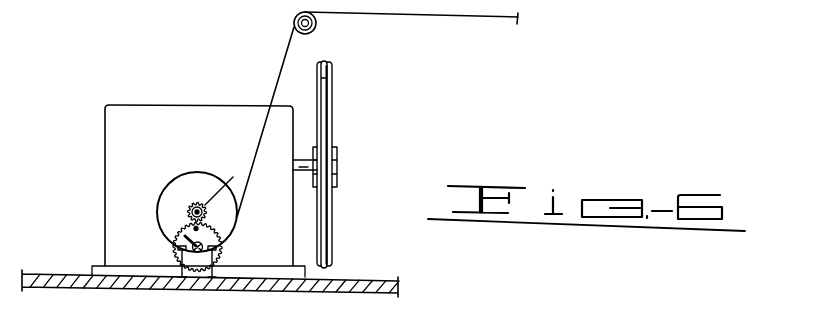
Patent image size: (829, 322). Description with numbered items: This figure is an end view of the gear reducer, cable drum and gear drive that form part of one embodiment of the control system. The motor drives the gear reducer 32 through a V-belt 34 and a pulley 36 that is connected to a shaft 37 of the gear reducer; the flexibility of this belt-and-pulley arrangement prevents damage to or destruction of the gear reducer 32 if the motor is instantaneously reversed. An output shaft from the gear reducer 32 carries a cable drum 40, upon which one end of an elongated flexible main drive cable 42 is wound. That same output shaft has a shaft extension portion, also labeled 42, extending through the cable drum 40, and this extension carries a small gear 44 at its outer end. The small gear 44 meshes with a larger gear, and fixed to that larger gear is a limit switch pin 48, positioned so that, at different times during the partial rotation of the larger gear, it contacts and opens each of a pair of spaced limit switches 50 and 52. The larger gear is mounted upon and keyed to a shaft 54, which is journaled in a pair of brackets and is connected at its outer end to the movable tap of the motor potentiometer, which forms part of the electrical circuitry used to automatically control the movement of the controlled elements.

The gear reducer 32 is at (173, 134).
The V-belt 34 is at (326, 79).
The pulley 36 is at (333, 103).
The shaft 37 is at (338, 163).
The cable drum 40 is at (181, 181).
The main drive cable 42 is at (445, 19).
The small gear 44 is at (225, 180).
The limit switch pin 48 is at (200, 229).
The limit switch 50 is at (222, 250).
The limit switch 52 is at (178, 252).
The shaft 54 is at (185, 236).